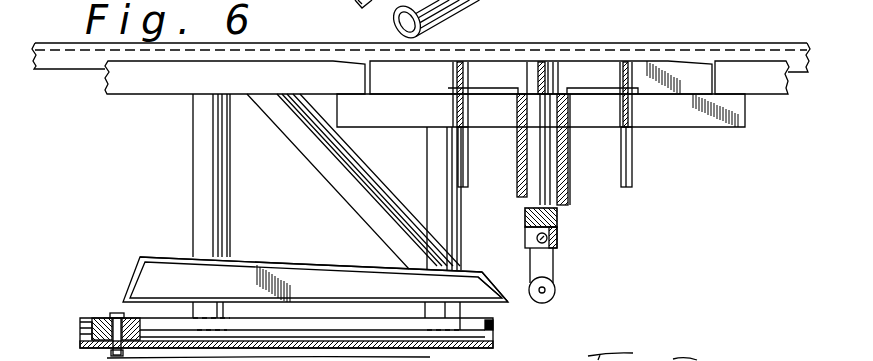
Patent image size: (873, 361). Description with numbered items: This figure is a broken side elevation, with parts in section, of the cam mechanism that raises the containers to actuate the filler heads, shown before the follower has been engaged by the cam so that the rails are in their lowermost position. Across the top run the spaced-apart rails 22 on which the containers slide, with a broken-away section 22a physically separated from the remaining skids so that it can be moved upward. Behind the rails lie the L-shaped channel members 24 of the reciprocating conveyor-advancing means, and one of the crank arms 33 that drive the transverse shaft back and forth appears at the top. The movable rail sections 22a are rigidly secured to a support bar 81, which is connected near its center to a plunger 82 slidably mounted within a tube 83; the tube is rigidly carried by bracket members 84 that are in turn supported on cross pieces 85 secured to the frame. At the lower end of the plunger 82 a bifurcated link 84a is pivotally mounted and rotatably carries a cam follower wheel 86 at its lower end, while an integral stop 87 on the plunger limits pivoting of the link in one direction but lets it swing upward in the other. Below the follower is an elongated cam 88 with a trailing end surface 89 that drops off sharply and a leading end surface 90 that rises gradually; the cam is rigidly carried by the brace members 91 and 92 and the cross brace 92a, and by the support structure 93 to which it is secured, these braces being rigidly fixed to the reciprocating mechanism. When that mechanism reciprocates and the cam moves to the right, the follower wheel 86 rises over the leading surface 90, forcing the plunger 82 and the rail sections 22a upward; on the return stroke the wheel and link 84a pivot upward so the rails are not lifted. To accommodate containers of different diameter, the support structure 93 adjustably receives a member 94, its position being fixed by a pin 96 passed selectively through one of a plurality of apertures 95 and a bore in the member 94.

The rails 22 is at (777, 88).
The broken section of skid members 22a is at (672, 62).
The L-shaped channel members 24 is at (52, 70).
The crank arms 33 is at (475, 1).
The support bar 81 is at (587, 72).
The plunger 82 is at (570, 208).
The tube 83 is at (570, 165).
The bracket members 84 is at (688, 122).
The bifurcated link 84a is at (548, 262).
The cross pieces 85 is at (642, 160).
The cam follower wheel 86 is at (555, 290).
The stop 87 is at (558, 238).
The elongated cam 88 is at (160, 249).
The trailing end surface 89 is at (138, 268).
The leading end surface 90 is at (490, 282).
The brace member 91 is at (226, 213).
The brace member 92 is at (461, 212).
The cross brace 92a is at (345, 193).
The support structure 93 is at (493, 330).
The member 94 is at (92, 332).
The apertures 95 is at (99, 317).
The pin 96 is at (110, 355).